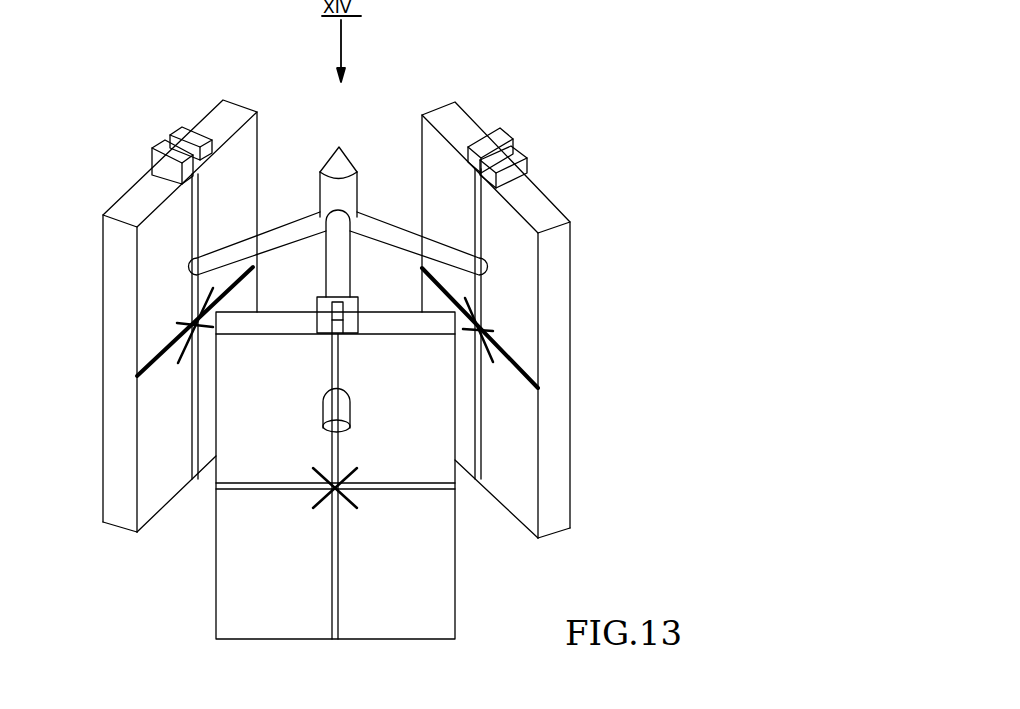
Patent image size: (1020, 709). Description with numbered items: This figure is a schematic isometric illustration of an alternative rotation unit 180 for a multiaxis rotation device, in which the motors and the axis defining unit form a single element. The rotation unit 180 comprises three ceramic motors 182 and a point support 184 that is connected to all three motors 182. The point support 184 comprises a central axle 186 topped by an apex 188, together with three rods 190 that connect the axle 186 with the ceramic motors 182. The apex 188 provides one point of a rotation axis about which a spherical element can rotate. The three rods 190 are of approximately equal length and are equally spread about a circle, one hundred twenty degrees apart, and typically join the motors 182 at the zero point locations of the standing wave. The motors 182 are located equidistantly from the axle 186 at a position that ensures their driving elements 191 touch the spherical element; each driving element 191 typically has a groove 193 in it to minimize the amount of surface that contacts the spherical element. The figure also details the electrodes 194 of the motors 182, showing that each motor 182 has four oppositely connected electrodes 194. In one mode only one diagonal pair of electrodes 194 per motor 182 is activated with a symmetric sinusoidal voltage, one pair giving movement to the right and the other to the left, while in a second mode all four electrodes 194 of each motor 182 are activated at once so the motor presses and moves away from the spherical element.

The rotation unit 180 is at (623, 420).
The ceramic motor 182 is at (132, 197).
The point support 184 is at (318, 200).
The axle 186 is at (348, 192).
The apex 188 is at (338, 143).
The rod 190 is at (333, 258).
The driving element 191 is at (180, 133).
The groove 193 is at (196, 160).
The electrode 194 is at (128, 372).